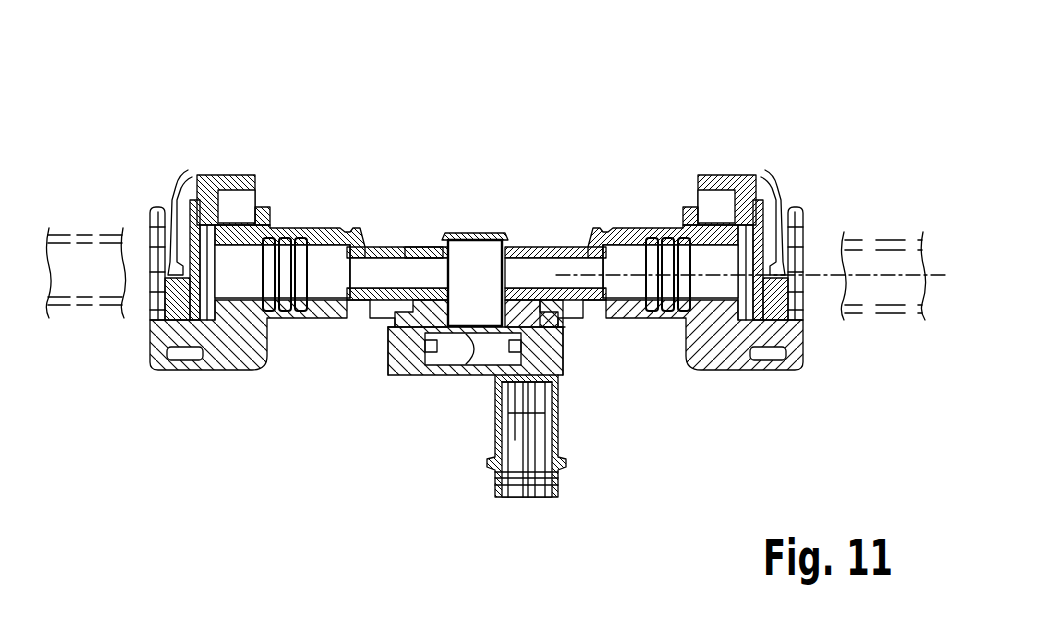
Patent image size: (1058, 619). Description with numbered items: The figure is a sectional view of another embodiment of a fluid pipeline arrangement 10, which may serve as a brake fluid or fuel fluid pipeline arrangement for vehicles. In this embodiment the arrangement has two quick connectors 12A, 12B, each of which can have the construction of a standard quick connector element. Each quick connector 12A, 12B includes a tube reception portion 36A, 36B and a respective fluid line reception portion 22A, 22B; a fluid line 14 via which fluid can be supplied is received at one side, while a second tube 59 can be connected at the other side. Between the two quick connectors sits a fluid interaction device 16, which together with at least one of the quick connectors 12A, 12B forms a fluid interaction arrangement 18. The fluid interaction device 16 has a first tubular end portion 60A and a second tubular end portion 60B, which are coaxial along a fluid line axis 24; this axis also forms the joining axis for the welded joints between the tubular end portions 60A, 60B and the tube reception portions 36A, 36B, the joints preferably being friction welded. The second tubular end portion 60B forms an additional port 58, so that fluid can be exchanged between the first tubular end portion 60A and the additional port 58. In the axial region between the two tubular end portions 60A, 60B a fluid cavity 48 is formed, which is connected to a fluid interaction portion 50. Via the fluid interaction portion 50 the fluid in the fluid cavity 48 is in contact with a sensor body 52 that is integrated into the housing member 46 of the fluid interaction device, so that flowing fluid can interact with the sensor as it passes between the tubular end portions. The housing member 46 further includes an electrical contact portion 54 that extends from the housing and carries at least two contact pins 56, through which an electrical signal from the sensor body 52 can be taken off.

The fluid pipeline arrangement 10 is at (511, 287).
The quick connector 12A is at (746, 380).
The quick connector 12B is at (205, 376).
The fluid line 14 is at (757, 242).
The fluid interaction device 16 is at (367, 279).
The fluid interaction arrangement 18 is at (654, 280).
The fluid line reception portion 22A is at (770, 190).
The fluid line reception portion 22B is at (190, 176).
The fluid line axis 24 is at (941, 275).
The tube reception portion 36A is at (587, 229).
The tube reception portion 36B is at (362, 228).
The housing member 46 is at (388, 345).
The fluid cavity 48 is at (478, 257).
The fluid interaction portion 50 is at (516, 367).
The sensor body 52 is at (560, 345).
The electrical contact portion 54 is at (579, 469).
The contact pins 56 is at (534, 470).
The additional port 58 is at (422, 246).
The second tube 59 is at (86, 235).
The first tubular end portion 60A is at (560, 247).
The second tubular end portion 60B is at (386, 247).